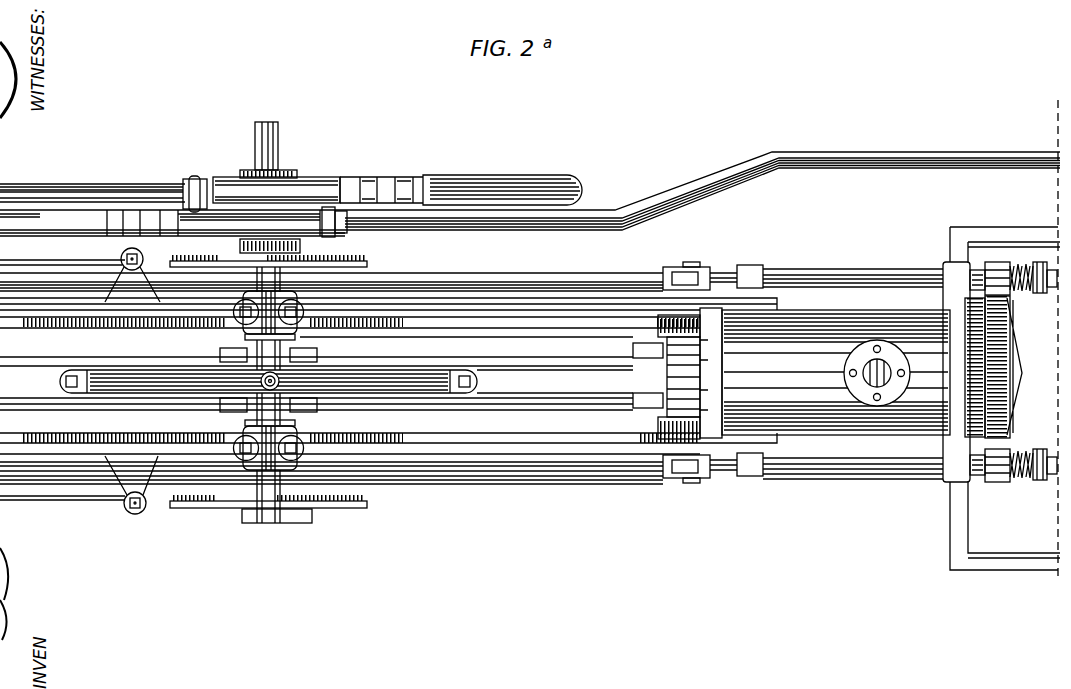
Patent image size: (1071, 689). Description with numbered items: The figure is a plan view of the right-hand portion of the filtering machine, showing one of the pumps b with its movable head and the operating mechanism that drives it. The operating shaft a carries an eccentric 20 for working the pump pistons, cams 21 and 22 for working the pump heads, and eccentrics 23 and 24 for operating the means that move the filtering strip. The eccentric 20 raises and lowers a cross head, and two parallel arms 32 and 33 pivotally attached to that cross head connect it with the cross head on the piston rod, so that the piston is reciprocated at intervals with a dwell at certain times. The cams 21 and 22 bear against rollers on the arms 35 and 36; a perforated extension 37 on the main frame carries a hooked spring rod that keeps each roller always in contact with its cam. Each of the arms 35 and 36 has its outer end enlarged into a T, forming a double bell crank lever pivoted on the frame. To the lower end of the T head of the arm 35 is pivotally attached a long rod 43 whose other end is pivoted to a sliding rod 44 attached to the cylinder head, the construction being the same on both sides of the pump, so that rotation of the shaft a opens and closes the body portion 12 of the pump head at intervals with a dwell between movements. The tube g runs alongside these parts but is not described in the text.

The operating shaft a is at (281, 138).
The tube g is at (124, 183).
The body portion 12 is at (1010, 335).
The eccentric 20 is at (393, 376).
The cam 21 is at (361, 508).
The cam 22 is at (370, 262).
The eccentric 23 is at (198, 180).
The eccentric 24 is at (517, 175).
The parallel arm 32 is at (85, 360).
The parallel arm 33 is at (63, 402).
The arm 35 is at (78, 504).
The arm 36 is at (58, 260).
The perforated extension 37 is at (132, 381).
The long rod 43 is at (575, 269).
The sliding rod 44 is at (863, 269).
The pump b is at (825, 373).